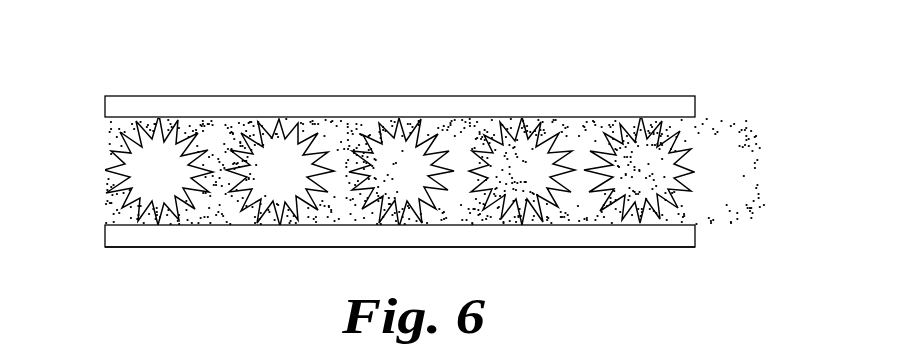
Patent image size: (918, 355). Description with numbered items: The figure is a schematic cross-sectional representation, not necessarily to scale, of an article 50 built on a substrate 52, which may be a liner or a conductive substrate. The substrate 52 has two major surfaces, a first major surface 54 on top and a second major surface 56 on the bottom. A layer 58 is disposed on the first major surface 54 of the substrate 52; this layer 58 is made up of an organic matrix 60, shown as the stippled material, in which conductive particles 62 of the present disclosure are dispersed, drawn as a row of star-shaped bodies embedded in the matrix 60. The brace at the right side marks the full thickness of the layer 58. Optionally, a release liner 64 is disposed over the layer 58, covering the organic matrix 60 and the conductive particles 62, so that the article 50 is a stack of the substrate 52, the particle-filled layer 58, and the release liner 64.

The article 50 is at (718, 55).
The substrate 52 is at (135, 237).
The first major surface 54 is at (120, 224).
The second major surface 56 is at (213, 248).
The layer 58 is at (399, 172).
The organic matrix 60 is at (585, 207).
The conductive particles 62 is at (502, 157).
The release liner 64 is at (593, 105).